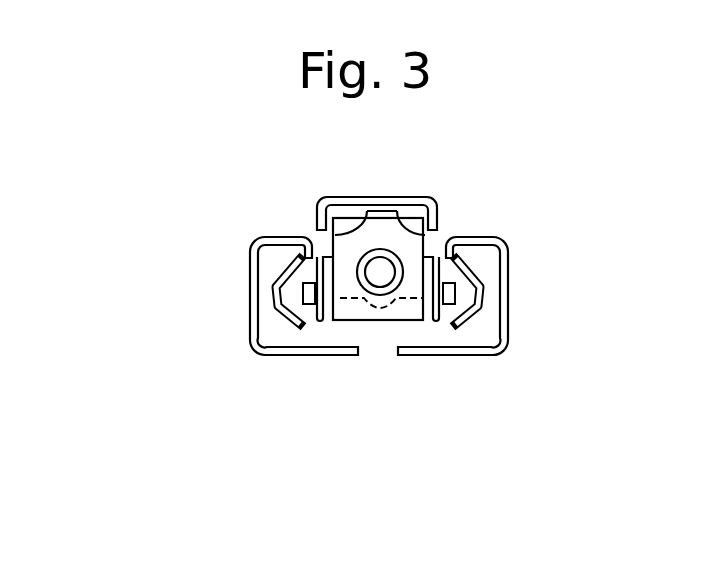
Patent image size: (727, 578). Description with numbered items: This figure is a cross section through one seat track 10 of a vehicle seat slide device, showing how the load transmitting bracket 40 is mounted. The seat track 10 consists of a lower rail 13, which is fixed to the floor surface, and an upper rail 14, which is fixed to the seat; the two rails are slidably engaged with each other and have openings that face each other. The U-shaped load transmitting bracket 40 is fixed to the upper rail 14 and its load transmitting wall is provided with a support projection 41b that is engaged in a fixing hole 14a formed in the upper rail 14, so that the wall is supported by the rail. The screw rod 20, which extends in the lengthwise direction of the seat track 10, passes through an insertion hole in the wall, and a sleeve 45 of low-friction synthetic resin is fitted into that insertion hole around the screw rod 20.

The seat track 10 is at (133, 173).
The upper rail 14 is at (318, 196).
The fixing holes 14a is at (396, 212).
The lower rail 13 is at (250, 313).
The load transmitting bracket 40 is at (348, 253).
The support projections 41b is at (442, 247).
The screw rod 20 is at (380, 277).
The sleeve 45 is at (393, 288).